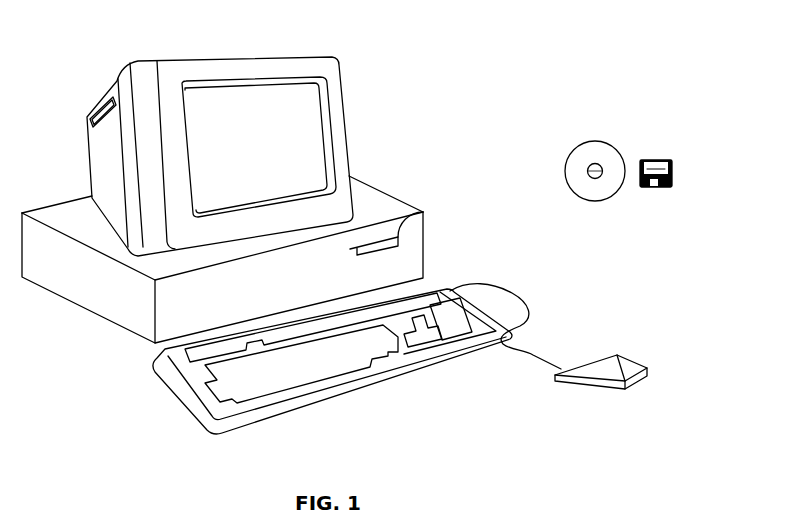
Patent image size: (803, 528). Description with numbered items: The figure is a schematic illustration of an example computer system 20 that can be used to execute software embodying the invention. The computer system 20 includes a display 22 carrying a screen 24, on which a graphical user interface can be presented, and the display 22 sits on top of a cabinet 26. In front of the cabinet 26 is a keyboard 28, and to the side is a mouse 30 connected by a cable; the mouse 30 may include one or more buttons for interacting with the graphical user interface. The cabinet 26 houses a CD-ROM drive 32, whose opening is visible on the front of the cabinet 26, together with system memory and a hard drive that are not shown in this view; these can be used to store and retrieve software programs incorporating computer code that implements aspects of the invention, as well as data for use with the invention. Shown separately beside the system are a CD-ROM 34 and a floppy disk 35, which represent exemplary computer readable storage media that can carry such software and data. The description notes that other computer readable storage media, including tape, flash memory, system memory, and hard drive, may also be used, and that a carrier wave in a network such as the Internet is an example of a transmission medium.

The computer system 20 is at (526, 37).
The display 22 is at (350, 151).
The screen 24 is at (322, 103).
The cabinet 26 is at (110, 327).
The keyboard 28 is at (332, 396).
The mouse 30 is at (638, 360).
The CD-ROM drive 32 is at (424, 212).
The CD-ROM 34 is at (594, 134).
The floppy disk 35 is at (661, 151).